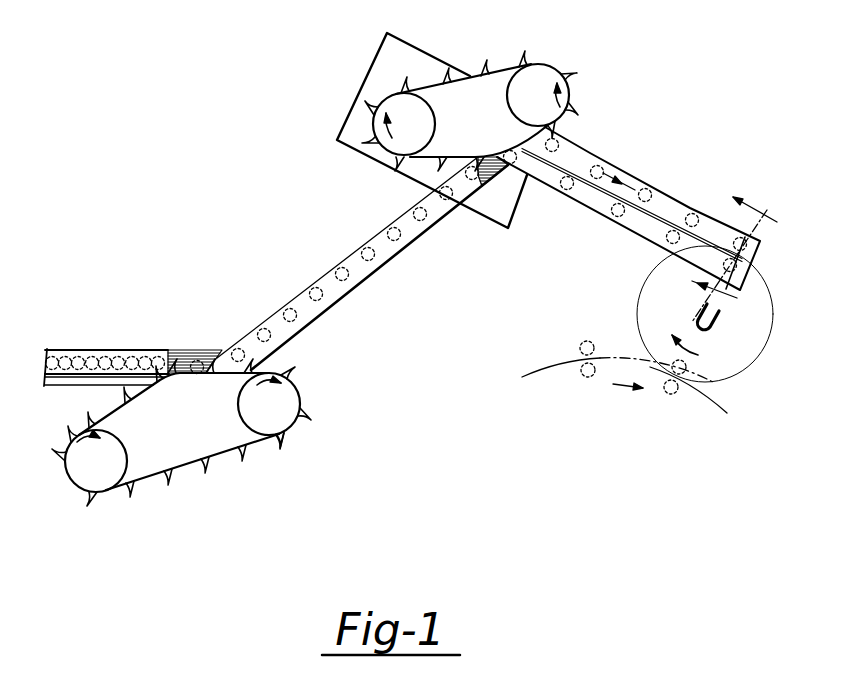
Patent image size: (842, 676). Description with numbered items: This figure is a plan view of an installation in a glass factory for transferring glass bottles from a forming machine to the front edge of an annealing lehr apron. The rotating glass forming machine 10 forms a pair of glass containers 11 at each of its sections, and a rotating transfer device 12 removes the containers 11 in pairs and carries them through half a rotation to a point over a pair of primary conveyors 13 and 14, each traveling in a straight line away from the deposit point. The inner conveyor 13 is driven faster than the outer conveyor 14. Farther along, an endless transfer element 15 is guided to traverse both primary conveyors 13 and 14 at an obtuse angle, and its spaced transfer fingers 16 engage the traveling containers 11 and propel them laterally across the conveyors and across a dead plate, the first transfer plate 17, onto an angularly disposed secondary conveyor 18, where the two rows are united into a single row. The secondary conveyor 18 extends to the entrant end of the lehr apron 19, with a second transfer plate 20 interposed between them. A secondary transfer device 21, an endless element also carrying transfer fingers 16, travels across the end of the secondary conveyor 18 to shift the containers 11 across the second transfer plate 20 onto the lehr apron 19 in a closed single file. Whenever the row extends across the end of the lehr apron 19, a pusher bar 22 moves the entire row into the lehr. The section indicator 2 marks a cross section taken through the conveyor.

The section line 2- 2 is at (723, 252).
The rotating glass forming machine 10 is at (543, 358).
The glass containers 11 is at (556, 146).
The rotating transfer device 12 is at (645, 277).
The inner primary conveyor 13 is at (633, 226).
The outer primary conveyor 14 is at (664, 203).
The endless transfer element 15 is at (500, 62).
The transfer fingers 16 is at (570, 63).
The first transfer plate 17 is at (487, 178).
The secondary conveyor 18 is at (375, 237).
The lehr apron 19 is at (80, 350).
The second transfer plate 20 is at (184, 357).
The secondary transfer device 21 is at (280, 457).
The pusher bar 22 is at (80, 380).